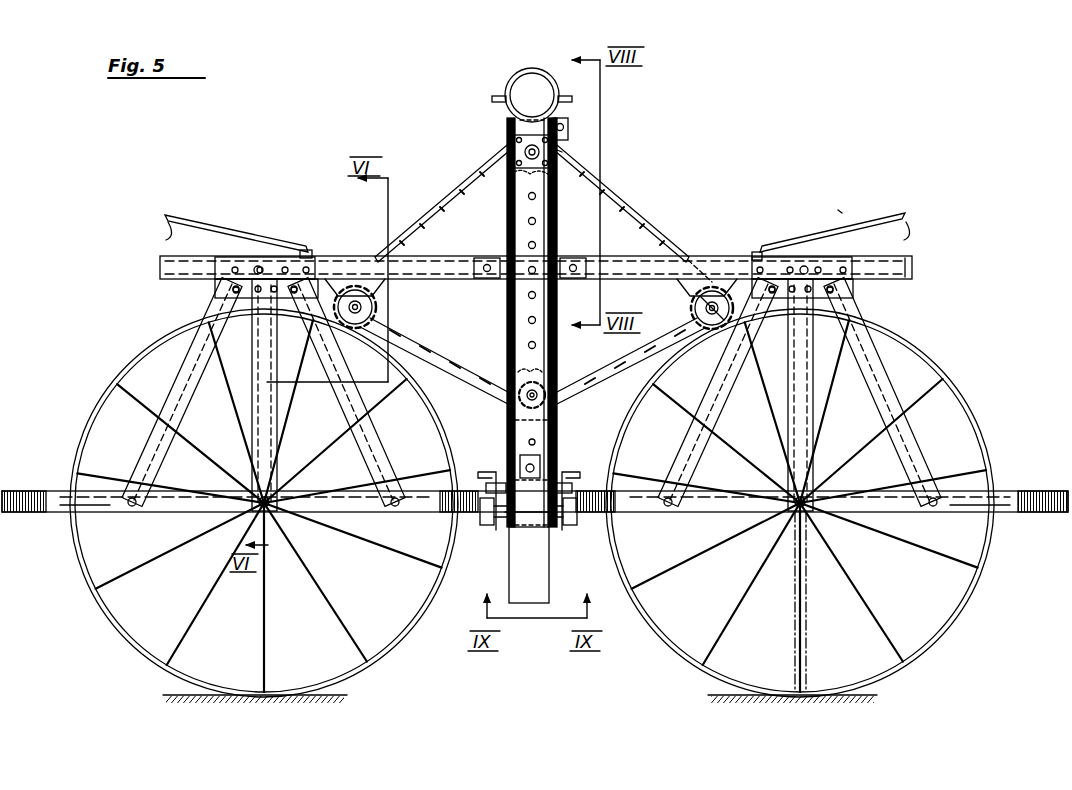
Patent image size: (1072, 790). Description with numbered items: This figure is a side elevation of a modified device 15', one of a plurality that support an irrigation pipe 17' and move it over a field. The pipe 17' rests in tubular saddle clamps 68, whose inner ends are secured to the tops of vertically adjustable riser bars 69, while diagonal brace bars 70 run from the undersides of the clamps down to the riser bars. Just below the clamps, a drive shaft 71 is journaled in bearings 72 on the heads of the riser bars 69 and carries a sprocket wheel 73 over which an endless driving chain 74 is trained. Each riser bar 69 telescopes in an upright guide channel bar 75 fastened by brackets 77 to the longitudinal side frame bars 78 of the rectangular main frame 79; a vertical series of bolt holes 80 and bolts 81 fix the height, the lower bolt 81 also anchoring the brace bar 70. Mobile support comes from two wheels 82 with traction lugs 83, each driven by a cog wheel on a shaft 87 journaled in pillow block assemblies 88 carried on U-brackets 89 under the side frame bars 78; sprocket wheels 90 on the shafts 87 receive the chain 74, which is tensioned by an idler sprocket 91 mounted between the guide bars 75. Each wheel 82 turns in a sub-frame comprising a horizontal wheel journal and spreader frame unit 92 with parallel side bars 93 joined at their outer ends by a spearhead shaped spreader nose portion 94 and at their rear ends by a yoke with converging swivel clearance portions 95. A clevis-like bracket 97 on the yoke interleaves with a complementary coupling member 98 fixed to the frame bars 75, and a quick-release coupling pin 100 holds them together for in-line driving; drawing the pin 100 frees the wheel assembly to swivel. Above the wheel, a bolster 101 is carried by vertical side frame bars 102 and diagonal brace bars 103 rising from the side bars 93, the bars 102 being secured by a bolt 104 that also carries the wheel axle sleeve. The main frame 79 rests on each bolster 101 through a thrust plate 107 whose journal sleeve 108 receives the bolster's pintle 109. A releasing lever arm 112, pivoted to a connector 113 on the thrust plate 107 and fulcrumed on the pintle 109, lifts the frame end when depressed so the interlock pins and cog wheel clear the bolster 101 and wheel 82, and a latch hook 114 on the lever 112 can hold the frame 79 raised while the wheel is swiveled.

The tubular saddle clamp 68 is at (518, 84).
The irrigation pipe 17' is at (544, 75).
The diagonal brace bar 70 is at (562, 140).
The shaft 71 is at (506, 150).
The bearing 72 is at (562, 151).
The sprocket wheel 73 is at (554, 166).
The endless driving chain 74 is at (630, 212).
The guide channel bar 75 is at (557, 345).
The bracket 77 is at (496, 265).
The longitudinal side frame bar 78 is at (718, 264).
The main frame 79 is at (913, 268).
The bolt hole 80 is at (528, 320).
The bolt 81 is at (528, 197).
The riser bar 69 is at (528, 221).
The wheel 82 is at (130, 322).
The traction lug 83 is at (76, 418).
The shaft 87 is at (710, 312).
The pillow block assembly 88 is at (362, 307).
The U-bracket 89 is at (382, 292).
The sprocket wheel 90 is at (378, 325).
The idler sprocket 91 is at (549, 372).
The wheel journal and spreader frame unit 92 is at (58, 484).
The side bar 93 is at (108, 512).
The spreader nose portion 94 is at (22, 498).
The swivel clearance portion 95 is at (456, 512).
The clevis-like bracket 97 is at (486, 526).
The coupling member 98 is at (550, 508).
The coupling pin 100 is at (496, 474).
The bolster 101 is at (216, 291).
The vertical side frame bar 102 is at (830, 420).
The diagonal brace bar 103 is at (178, 398).
The bolt 104 is at (270, 503).
The thrust plate 107 is at (240, 257).
The journal sleeve 108 is at (300, 254).
The pintle 109 is at (272, 256).
The releasing lever arm 112 is at (194, 222).
The connector 113 is at (758, 254).
The latch hook 114 is at (166, 232).
The device 15' is at (857, 191).